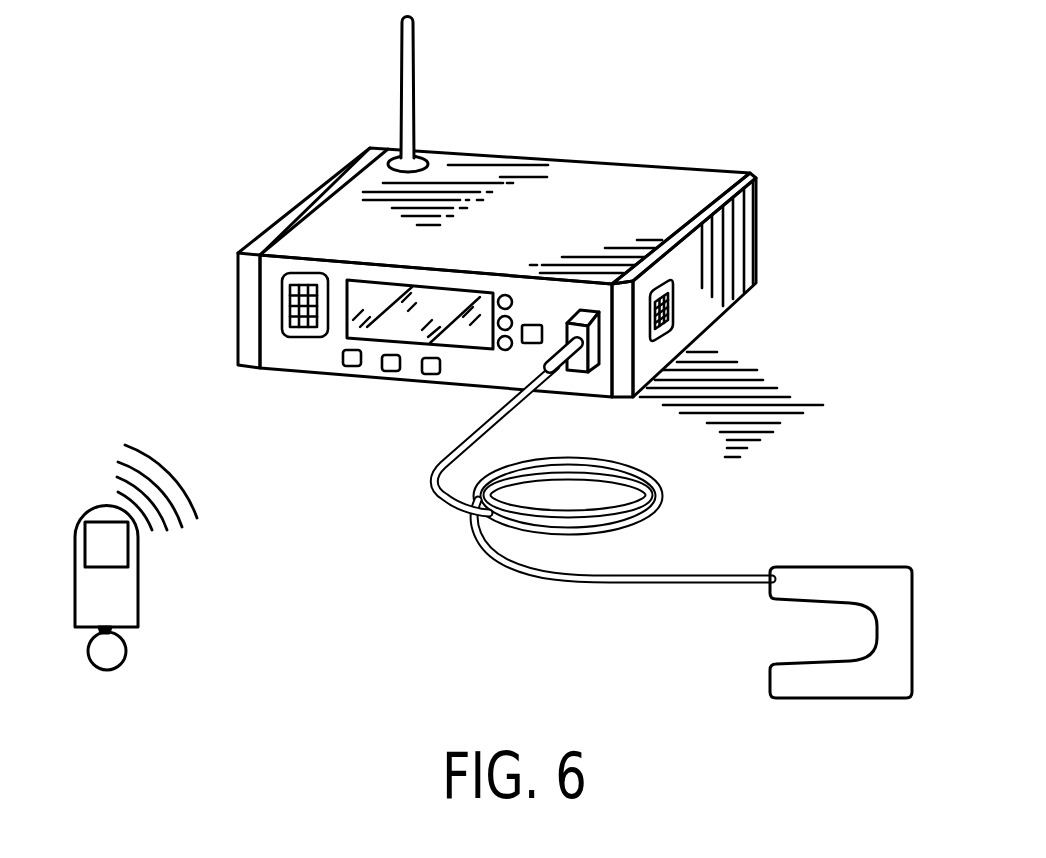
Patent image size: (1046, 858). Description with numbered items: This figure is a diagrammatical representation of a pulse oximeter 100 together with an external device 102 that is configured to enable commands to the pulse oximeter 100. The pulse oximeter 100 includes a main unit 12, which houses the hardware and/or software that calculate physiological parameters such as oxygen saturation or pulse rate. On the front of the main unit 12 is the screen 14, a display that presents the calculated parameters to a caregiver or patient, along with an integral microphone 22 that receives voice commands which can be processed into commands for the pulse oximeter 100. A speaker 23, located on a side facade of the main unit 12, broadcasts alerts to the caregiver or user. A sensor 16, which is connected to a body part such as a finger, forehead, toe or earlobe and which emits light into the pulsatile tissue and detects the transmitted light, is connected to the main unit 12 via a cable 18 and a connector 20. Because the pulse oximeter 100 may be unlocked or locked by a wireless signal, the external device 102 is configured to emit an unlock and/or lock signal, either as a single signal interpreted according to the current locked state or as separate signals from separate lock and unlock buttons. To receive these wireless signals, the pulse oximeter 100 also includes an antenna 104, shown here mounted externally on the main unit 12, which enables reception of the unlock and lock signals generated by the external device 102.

The pulse oximeter 100 is at (319, 108).
The antenna 104 is at (415, 25).
The main unit 12 is at (602, 165).
The integral microphone 22 is at (288, 312).
The speaker 23 is at (673, 318).
The display 14 is at (465, 350).
The connector 20 is at (597, 372).
The cable 18 is at (488, 558).
The sensor 16 is at (895, 572).
The external device 102 is at (140, 582).